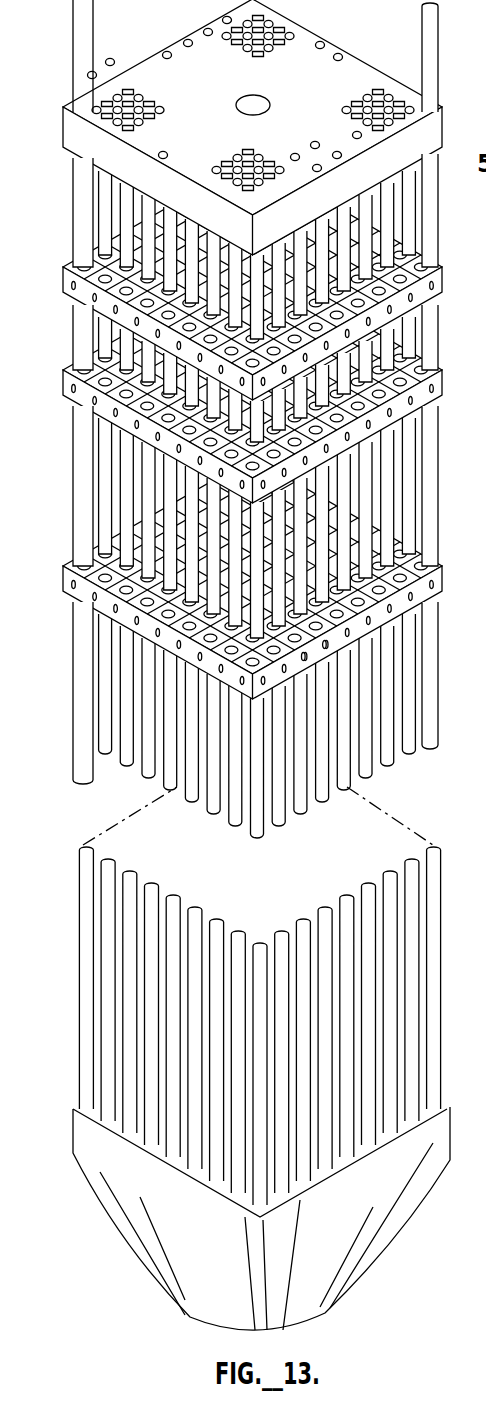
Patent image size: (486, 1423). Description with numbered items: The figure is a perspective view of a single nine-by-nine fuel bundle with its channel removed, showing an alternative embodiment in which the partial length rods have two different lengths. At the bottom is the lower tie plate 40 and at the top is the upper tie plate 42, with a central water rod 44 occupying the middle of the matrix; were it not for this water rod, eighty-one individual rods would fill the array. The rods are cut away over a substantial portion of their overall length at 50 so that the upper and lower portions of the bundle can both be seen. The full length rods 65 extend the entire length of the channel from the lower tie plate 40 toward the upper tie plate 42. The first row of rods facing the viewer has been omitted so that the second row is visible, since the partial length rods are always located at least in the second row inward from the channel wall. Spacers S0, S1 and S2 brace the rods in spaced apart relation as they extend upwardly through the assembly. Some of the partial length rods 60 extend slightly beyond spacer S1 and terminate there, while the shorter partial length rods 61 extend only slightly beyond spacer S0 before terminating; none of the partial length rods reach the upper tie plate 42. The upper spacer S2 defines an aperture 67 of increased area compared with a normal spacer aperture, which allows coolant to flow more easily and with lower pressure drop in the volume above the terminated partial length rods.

The lower tie plate 40 is at (92, 1144).
The upper tie plate 42 is at (98, 86).
The central water rod 44 is at (268, 98).
The cut-away portion of rods 50 is at (78, 907).
The partial length rods 60 is at (380, 366).
The partial length rods 61 is at (327, 643).
The full length rods 65 is at (72, 223).
The aperture 67 is at (68, 266).
The spacer S0 is at (437, 574).
The spacer S1 is at (437, 390).
The spacer S2 is at (437, 285).